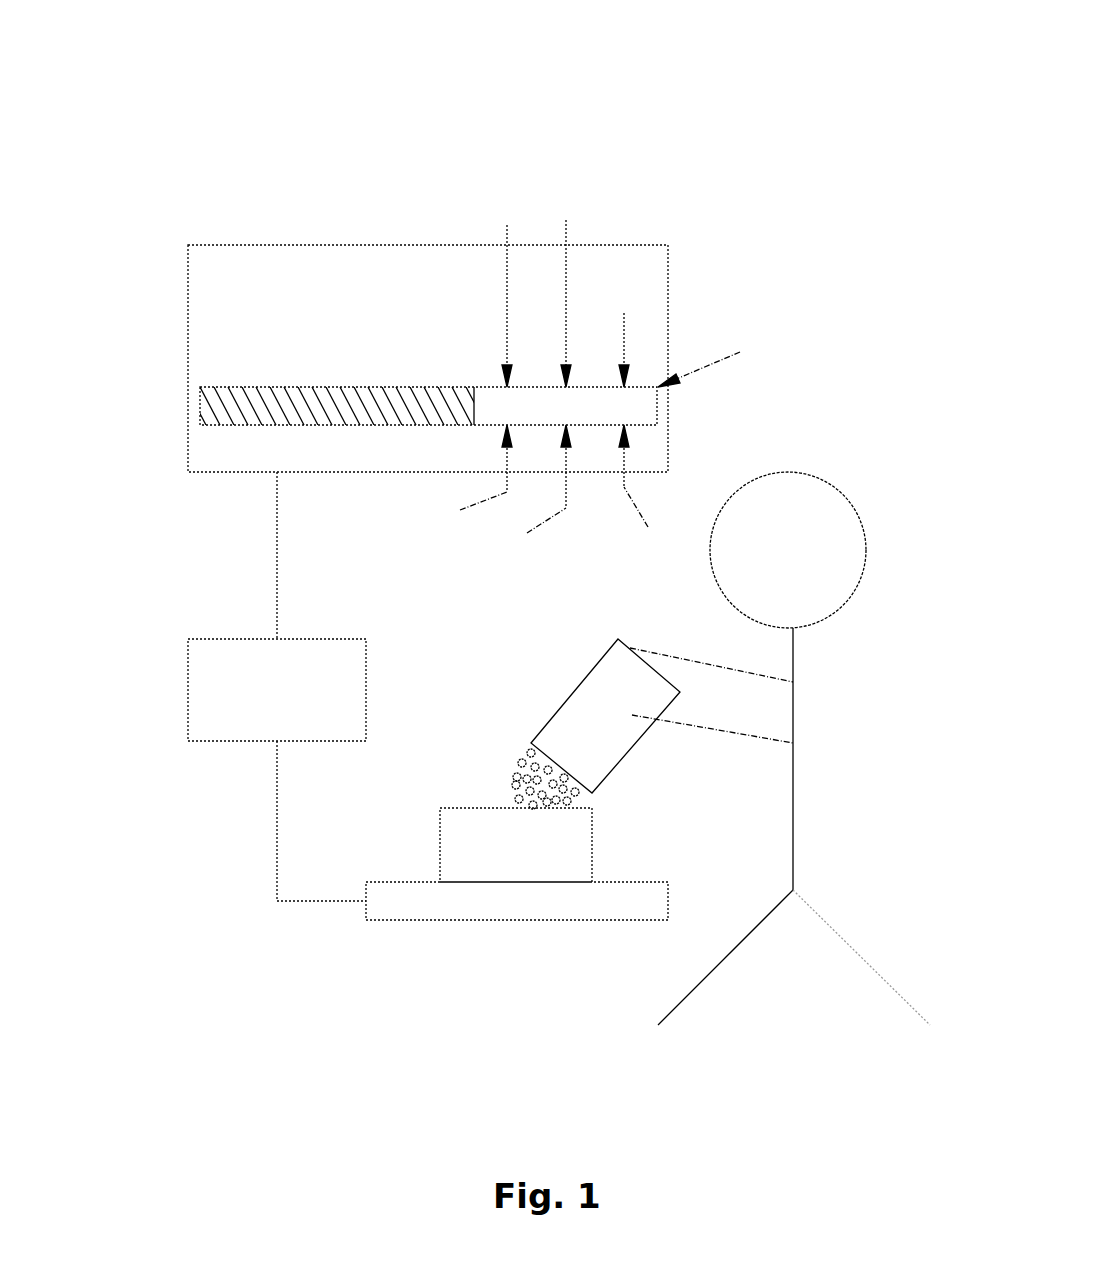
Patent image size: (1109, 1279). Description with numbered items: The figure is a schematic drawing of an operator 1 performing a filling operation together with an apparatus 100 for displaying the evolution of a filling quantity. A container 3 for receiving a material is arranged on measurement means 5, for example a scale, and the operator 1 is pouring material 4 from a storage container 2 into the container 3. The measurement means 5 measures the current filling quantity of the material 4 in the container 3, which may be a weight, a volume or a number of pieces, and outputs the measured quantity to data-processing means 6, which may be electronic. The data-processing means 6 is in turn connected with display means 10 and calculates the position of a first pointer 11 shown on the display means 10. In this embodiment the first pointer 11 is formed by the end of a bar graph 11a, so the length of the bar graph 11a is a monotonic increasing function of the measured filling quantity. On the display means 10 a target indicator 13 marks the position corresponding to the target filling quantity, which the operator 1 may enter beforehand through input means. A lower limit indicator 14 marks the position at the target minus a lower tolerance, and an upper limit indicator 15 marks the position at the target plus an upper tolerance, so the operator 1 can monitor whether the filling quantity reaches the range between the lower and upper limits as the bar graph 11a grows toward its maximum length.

The apparatus 100 is at (438, 523).
The display means 10 is at (252, 230).
The first pointer 11 is at (256, 440).
The bar graph 11a is at (279, 332).
The target indicator 13 is at (567, 220).
The lower limit indicator 14 is at (507, 225).
The upper limit indicator 15 is at (625, 313).
The operator 1 is at (856, 483).
The storage container 2 is at (578, 655).
The container 3 is at (422, 834).
The material 4 is at (500, 751).
The measurement means 5 is at (406, 938).
The data-processing means 6 is at (176, 755).